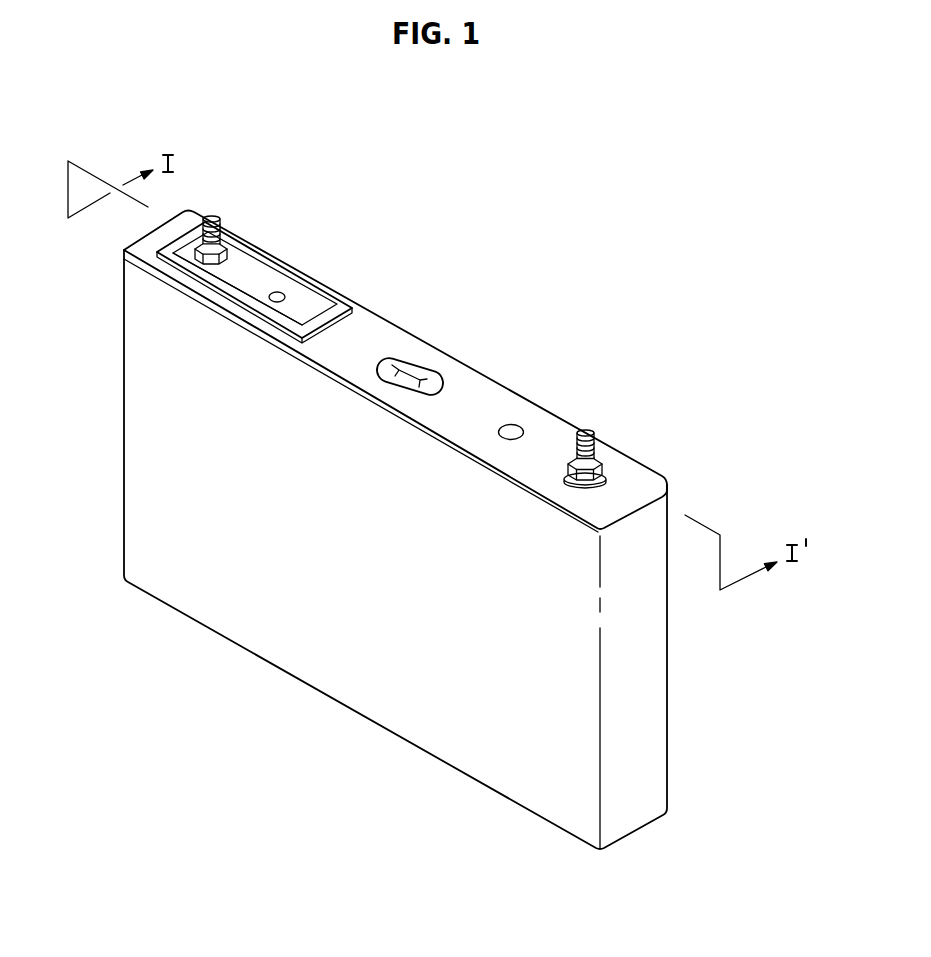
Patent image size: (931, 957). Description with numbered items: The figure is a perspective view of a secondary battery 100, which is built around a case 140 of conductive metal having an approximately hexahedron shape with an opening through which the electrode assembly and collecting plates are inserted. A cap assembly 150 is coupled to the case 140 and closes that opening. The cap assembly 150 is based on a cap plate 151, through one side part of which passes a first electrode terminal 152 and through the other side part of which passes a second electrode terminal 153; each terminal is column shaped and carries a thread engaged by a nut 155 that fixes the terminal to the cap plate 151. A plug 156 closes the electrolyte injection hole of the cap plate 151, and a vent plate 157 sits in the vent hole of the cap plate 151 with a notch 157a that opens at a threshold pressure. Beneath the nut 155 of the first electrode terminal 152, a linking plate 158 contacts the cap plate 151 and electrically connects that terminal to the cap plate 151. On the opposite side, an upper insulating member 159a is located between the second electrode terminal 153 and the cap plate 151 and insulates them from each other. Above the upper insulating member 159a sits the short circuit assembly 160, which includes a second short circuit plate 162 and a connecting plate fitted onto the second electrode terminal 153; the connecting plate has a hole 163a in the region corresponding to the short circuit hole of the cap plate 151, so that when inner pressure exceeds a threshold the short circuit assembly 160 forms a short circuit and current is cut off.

The secondary battery 100 is at (444, 193).
The case 140 is at (340, 688).
The cap assembly 150 is at (500, 372).
The cap plate 151 is at (382, 338).
The first electrode terminal 152 is at (586, 432).
The second electrode terminal 153 is at (213, 216).
The nut 155 is at (197, 267).
The plug 156 is at (515, 428).
The vent plate 157 is at (412, 358).
The notch 157a is at (418, 377).
The linking plate 158 is at (605, 474).
The upper insulating member 159a is at (322, 292).
The short circuit assembly 160 is at (272, 265).
The second short circuit plate 162 is at (247, 272).
The hole 163a is at (282, 292).